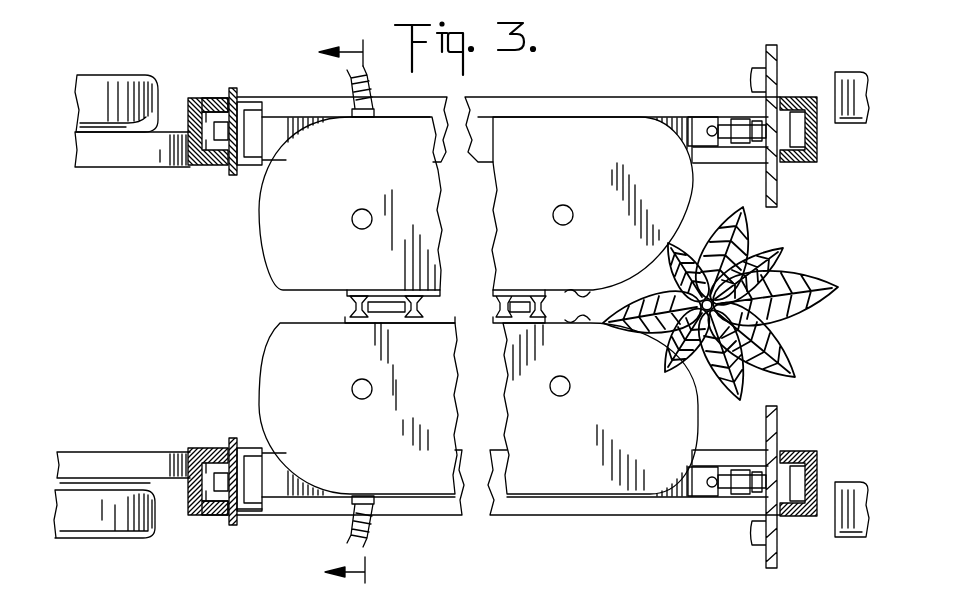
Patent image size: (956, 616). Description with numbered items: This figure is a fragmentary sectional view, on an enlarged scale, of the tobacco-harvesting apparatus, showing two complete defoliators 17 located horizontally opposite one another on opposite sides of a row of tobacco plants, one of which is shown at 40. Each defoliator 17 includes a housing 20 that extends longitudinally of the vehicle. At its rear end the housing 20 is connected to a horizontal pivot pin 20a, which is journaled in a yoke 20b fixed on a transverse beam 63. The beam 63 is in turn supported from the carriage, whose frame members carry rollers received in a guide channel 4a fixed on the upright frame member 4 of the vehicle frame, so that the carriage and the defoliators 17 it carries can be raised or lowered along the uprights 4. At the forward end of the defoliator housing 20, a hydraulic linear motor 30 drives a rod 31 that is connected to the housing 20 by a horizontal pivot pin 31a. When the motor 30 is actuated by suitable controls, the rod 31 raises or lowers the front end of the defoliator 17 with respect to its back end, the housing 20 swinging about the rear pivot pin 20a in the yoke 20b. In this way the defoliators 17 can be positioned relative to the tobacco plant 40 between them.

The upright 4 is at (200, 166).
The guide channel 4a is at (213, 99).
The defoliator 17 is at (678, 96).
The housing 20 is at (262, 231).
The horizontal pivot pin 20a is at (257, 513).
The yoke 20b is at (248, 455).
The hydraulic linear motor 30 is at (746, 494).
The rod 31 is at (729, 494).
The horizontal pivot pin 31a is at (717, 498).
The tobacco plant 40 is at (748, 237).
The transverse beam 63 is at (232, 440).